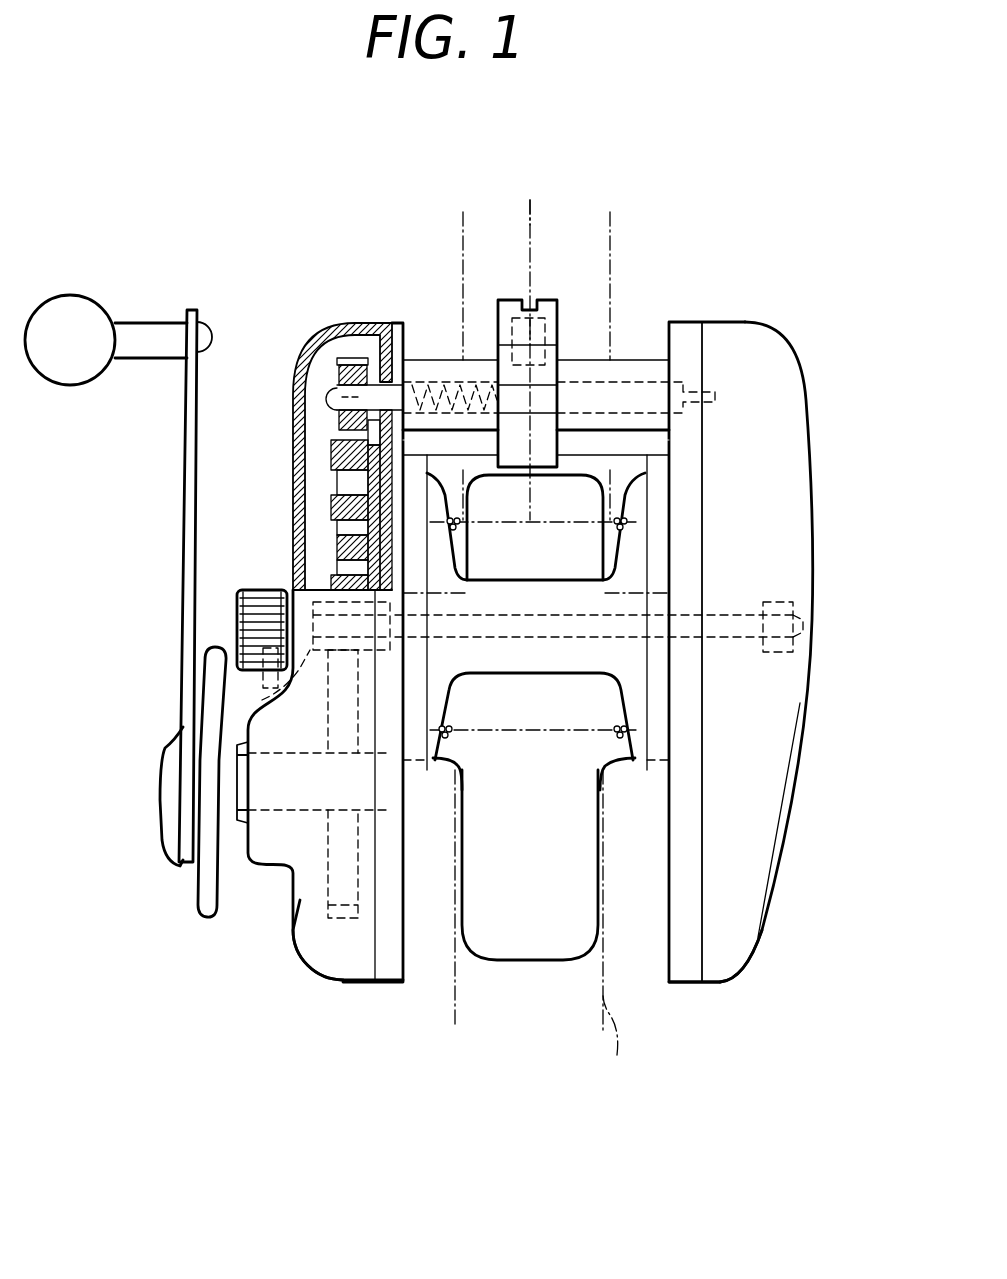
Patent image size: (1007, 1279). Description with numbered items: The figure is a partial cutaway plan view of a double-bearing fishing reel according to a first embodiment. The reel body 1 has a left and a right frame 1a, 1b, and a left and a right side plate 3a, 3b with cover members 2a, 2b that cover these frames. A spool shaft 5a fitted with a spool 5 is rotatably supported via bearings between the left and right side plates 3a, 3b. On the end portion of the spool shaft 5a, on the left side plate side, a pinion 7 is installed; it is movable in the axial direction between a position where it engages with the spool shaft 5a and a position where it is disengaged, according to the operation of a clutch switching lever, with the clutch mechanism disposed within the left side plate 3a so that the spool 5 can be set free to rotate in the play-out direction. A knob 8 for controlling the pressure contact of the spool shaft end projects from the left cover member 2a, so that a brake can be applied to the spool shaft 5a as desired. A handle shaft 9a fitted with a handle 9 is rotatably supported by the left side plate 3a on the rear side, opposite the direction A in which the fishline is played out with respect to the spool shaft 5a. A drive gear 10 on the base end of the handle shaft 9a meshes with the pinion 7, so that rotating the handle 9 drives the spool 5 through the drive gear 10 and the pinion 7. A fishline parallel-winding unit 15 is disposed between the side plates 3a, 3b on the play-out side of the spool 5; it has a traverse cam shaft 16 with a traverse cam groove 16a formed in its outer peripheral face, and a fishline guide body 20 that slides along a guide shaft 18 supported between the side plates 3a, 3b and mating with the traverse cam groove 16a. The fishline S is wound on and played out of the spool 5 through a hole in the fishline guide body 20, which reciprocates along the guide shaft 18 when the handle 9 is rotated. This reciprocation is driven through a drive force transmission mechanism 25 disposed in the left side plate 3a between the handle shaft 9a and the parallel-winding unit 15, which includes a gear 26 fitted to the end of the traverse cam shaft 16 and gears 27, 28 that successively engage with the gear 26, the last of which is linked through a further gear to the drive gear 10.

The reel body 1 is at (452, 613).
The left frame 1a is at (385, 325).
The right frame 1b is at (700, 325).
The left cover member 2a is at (300, 345).
The right cover member 2b is at (782, 355).
The left side plate 3a is at (360, 988).
The right side plate 3b is at (700, 990).
The spool 5 is at (580, 700).
The spool shaft 5a is at (728, 613).
The pinion 7 is at (182, 730).
The knob 8 is at (257, 672).
The handle 9 is at (187, 643).
The handle shaft 9a is at (275, 800).
The drive gear 10 is at (330, 893).
The fishline parallel-winding unit 15 is at (432, 323).
The traverse cam shaft 16 is at (345, 325).
The traverse cam groove 16a is at (468, 380).
The guide shaft 18 is at (665, 440).
The fishline guide body 20 is at (560, 315).
The drive force transmission mechanism 25 is at (257, 474).
The gear 26 is at (340, 378).
The gear 27 is at (340, 447).
The gear 28 is at (340, 522).
The direction in which the fishline is played out A is at (563, 243).
The fishline S is at (530, 225).